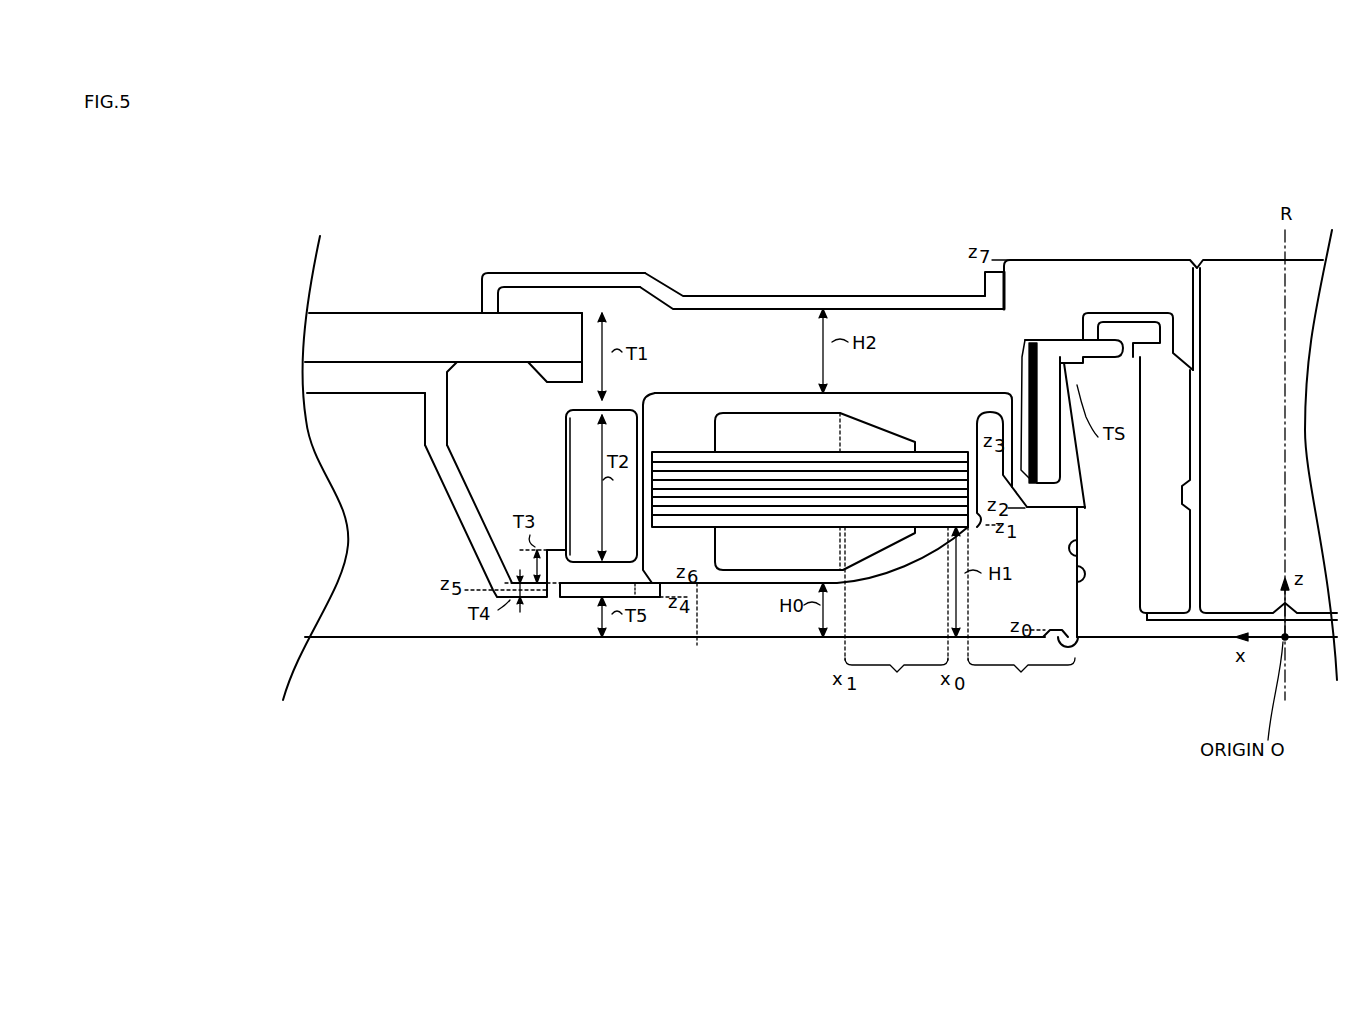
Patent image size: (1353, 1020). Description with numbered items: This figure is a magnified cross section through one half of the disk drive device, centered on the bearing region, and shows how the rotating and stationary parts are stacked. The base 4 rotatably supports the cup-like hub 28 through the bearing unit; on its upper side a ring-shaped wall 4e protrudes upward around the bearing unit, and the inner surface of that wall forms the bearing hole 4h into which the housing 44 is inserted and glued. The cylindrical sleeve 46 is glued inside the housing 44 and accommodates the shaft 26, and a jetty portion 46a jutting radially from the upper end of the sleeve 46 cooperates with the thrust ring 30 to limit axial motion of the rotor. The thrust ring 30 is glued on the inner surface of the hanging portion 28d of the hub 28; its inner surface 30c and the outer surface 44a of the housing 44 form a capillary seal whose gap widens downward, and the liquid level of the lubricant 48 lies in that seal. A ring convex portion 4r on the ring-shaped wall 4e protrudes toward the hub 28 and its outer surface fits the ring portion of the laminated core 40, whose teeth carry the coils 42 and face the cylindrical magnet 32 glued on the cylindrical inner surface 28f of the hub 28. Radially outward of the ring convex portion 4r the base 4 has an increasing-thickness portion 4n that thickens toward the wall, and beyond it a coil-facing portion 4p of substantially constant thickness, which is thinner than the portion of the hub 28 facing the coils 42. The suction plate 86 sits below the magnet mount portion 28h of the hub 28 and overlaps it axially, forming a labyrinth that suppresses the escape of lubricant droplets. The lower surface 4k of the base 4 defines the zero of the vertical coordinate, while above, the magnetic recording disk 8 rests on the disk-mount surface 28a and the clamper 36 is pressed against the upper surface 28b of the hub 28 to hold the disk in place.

The base 4 is at (363, 578).
The magnetic recording disk 8 is at (347, 340).
The shaft 26 is at (1217, 273).
The hub 28 is at (1093, 277).
The disk-mount surface 28a is at (477, 363).
The upper surface 28b is at (632, 307).
The hanging portion 28d is at (1022, 423).
The cylindrical inner surface 28f is at (575, 450).
The magnet mount portion 28h is at (497, 508).
The thrust ring 30 is at (1050, 370).
The inner surface 30c is at (1067, 435).
The cylindrical magnet 32 is at (583, 478).
The clamper 36 is at (490, 283).
The laminated core 40 is at (688, 475).
The coils 42 is at (805, 540).
The housing 44 is at (1222, 630).
The outer surface 44a is at (1073, 483).
The sleeve 46 is at (1170, 590).
The jetty portion 46a is at (1123, 323).
The lubricant 48 is at (1060, 450).
The suction plate 86 is at (571, 598).
The ring-shaped wall 4e is at (1021, 677).
The bearing hole 4h is at (1080, 612).
The lower surface 4k is at (1320, 640).
The increasing-thickness portion 4n is at (896, 611).
The coil-facing portion 4p is at (756, 615).
The ring convex portion 4r is at (985, 470).